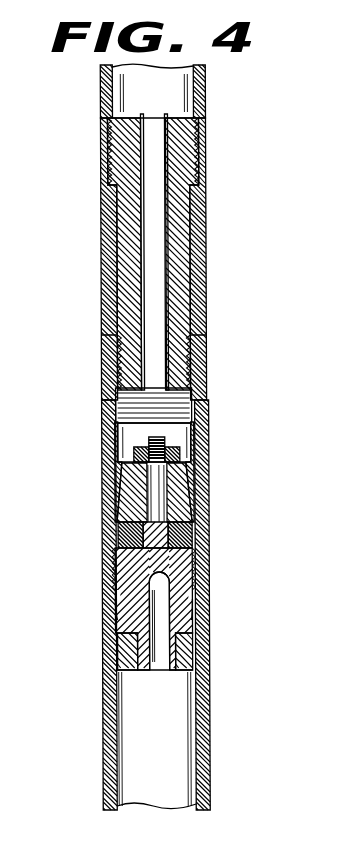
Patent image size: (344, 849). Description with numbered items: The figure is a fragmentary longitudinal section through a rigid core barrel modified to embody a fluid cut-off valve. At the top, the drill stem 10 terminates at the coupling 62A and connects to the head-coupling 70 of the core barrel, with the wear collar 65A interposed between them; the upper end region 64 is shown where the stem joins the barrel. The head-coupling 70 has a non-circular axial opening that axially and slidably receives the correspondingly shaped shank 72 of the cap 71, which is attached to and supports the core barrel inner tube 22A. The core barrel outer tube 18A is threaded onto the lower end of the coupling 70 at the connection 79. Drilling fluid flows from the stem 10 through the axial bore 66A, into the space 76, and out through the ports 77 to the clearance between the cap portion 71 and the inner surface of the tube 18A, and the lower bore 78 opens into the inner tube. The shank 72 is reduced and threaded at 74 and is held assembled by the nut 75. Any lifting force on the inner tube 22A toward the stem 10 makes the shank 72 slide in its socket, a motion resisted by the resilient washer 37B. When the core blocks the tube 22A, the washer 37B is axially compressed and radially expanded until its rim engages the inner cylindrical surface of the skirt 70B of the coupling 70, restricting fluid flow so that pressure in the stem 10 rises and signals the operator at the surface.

The drill stem 10 is at (212, 128).
The top sub 64 is at (203, 100).
The axial bore 66A is at (147, 212).
The coupling 62A is at (203, 223).
The wear collar 65A is at (203, 295).
The space 76 is at (207, 408).
The reduced threaded portion of shank 74 is at (145, 445).
The nut 75 is at (147, 458).
The shank 72 is at (135, 488).
The ports 77 is at (205, 505).
The head-coupling 70 is at (205, 465).
The resilient washer 37B is at (197, 525).
The skirt 70B is at (197, 545).
The threaded connection 79 is at (205, 567).
The bore 78 is at (165, 603).
The cap 71 is at (130, 603).
The core barrel outer tube 18A is at (204, 702).
The core barrel inner tube 22A is at (114, 738).